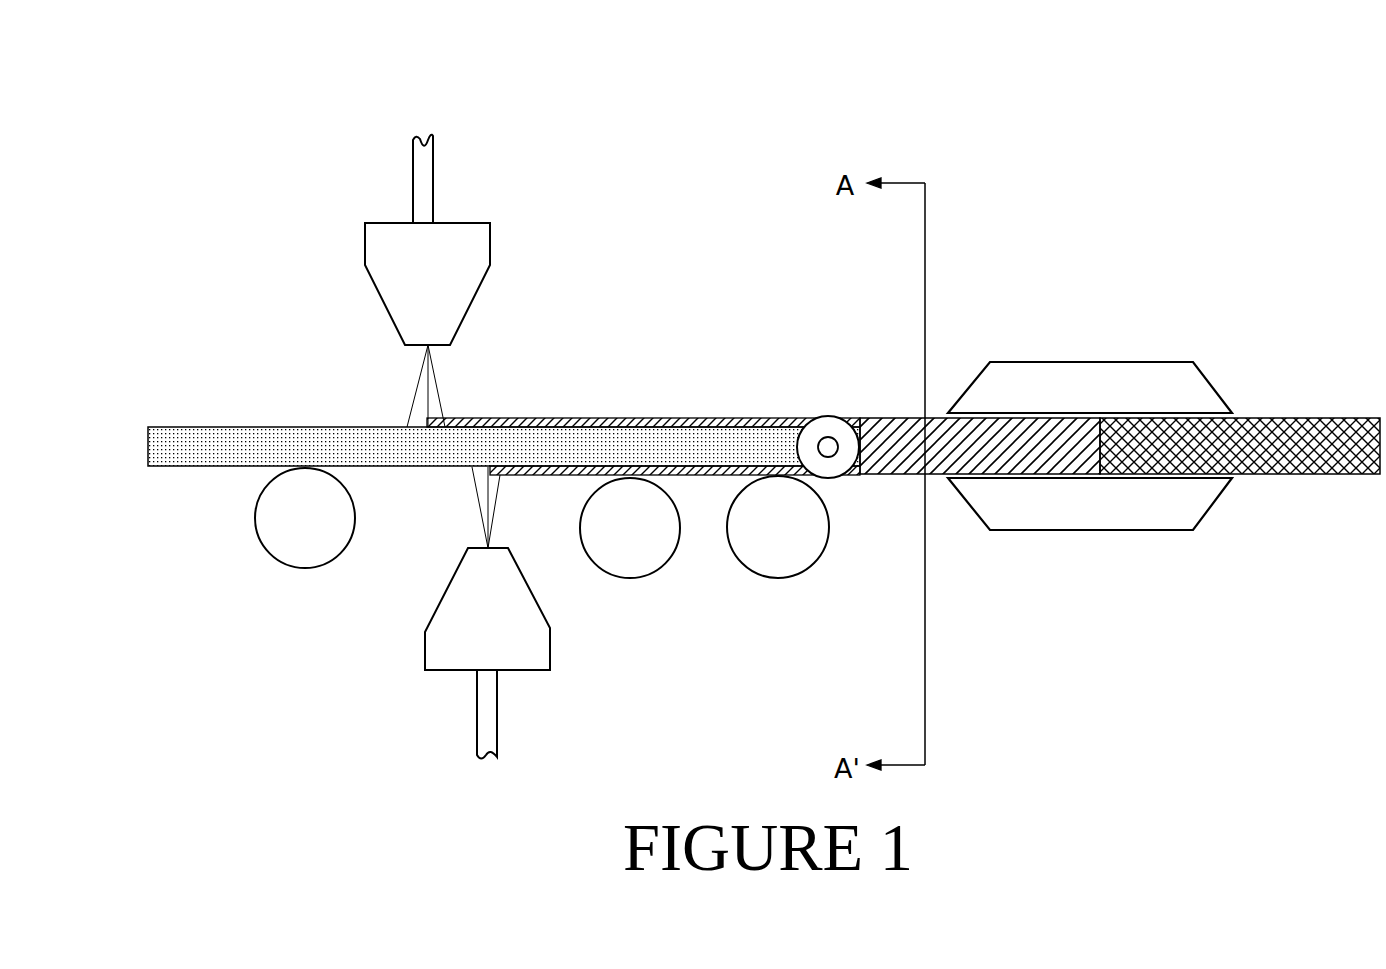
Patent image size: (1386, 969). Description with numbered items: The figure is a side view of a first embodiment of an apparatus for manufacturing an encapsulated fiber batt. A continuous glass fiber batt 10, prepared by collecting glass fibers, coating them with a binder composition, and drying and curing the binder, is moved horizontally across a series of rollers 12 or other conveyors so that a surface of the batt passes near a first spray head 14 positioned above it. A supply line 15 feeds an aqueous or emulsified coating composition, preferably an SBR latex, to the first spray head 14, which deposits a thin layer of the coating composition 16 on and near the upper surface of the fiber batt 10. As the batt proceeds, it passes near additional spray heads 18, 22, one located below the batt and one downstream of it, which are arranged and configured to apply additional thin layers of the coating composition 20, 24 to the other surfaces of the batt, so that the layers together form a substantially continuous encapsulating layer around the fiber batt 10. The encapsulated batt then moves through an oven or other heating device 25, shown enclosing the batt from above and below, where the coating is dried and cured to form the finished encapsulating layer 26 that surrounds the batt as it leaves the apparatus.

The continuous glass fiber batt 10 is at (330, 426).
The rollers 12 is at (255, 520).
The first spray head 14 is at (480, 287).
The supply line 15 is at (433, 177).
The thin layer of coating composition 16 is at (570, 417).
The additional spray head 18 is at (550, 645).
The additional thin layer of coating composition 20 is at (550, 475).
The additional spray head 22 is at (826, 416).
The additional thin layer of coating composition 24 is at (873, 475).
The oven or other heating device 25 is at (1073, 362).
The encapsulating layer 26 is at (1290, 417).